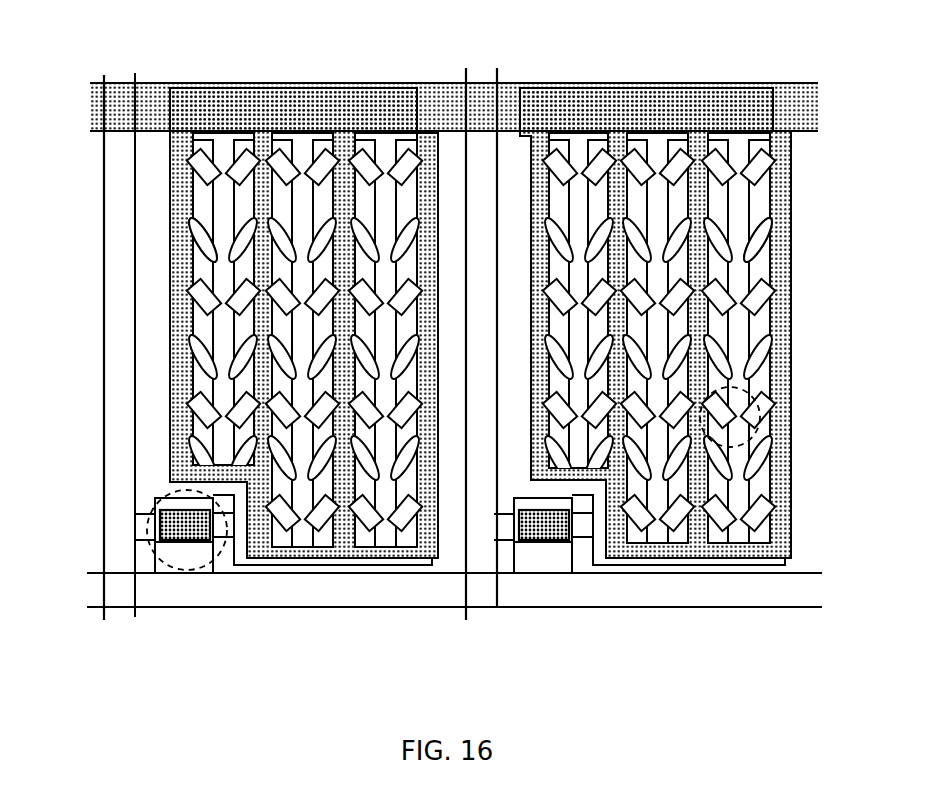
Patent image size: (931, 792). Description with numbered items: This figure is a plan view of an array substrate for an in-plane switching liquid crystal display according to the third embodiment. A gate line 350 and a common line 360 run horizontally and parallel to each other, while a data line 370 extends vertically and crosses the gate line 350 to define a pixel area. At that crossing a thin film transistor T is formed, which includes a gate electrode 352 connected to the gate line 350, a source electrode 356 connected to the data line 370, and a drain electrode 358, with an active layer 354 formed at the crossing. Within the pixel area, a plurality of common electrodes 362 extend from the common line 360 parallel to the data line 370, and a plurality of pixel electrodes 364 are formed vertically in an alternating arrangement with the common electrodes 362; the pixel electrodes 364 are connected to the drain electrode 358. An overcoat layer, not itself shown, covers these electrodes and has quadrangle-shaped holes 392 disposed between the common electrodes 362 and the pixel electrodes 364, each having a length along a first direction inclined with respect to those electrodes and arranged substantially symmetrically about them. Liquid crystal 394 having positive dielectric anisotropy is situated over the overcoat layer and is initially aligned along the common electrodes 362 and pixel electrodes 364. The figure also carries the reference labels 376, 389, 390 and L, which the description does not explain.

The gate line 350 is at (440, 616).
The gate electrode 352 is at (187, 556).
The active layer 354 is at (155, 522).
The source electrode 356 is at (148, 576).
The drain electrode 358 is at (228, 552).
The common line 360 is at (549, 77).
The common electrodes 362 is at (172, 183).
The pixel electrodes 364 is at (210, 328).
The data line 370 is at (102, 370).
The pixel electrode 376 is at (238, 86).
The liquid crystal molecule 389 is at (190, 243).
The pixel electrode 390 is at (797, 160).
The holes 392 is at (782, 291).
The liquid crystal 394 is at (773, 240).
The thin film transistor T is at (198, 572).
The liquid crystal domain L is at (768, 396).